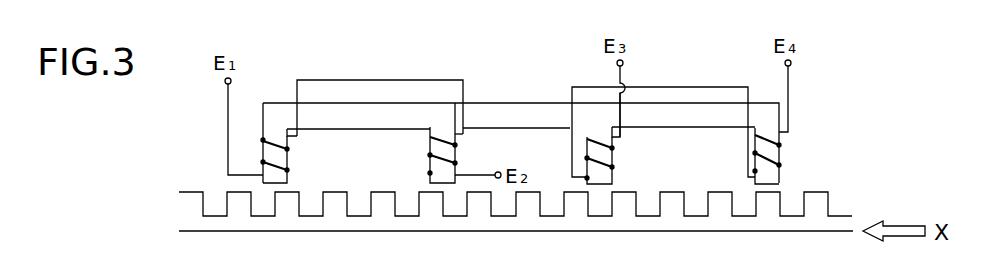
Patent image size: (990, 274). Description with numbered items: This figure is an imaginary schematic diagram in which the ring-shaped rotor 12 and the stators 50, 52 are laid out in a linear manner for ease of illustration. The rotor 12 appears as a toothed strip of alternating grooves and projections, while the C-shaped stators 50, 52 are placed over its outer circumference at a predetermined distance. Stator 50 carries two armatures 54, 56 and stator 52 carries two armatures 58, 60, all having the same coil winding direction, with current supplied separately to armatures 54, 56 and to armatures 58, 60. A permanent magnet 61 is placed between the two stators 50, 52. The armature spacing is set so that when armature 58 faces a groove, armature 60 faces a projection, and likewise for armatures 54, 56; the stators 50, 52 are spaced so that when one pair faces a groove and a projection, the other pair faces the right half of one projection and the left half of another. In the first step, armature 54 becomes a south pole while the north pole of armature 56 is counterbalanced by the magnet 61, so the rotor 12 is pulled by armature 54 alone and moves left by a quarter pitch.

The rotor 12 is at (882, 202).
The stator 50 is at (365, 112).
The stator 52 is at (683, 112).
The armature 54 is at (289, 160).
The armature 56 is at (457, 153).
The armature 58 is at (614, 158).
The armature 60 is at (781, 153).
The permanent magnet 61 is at (525, 102).